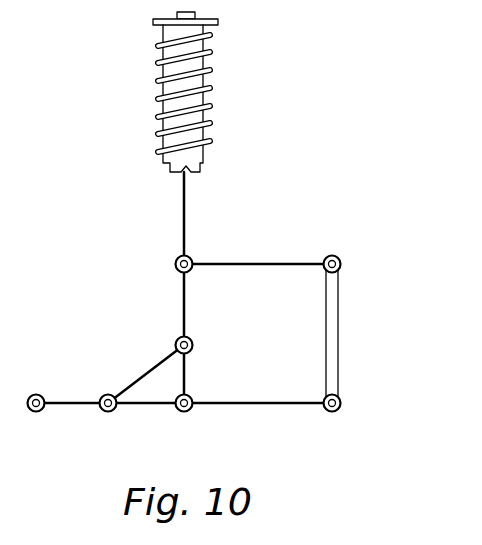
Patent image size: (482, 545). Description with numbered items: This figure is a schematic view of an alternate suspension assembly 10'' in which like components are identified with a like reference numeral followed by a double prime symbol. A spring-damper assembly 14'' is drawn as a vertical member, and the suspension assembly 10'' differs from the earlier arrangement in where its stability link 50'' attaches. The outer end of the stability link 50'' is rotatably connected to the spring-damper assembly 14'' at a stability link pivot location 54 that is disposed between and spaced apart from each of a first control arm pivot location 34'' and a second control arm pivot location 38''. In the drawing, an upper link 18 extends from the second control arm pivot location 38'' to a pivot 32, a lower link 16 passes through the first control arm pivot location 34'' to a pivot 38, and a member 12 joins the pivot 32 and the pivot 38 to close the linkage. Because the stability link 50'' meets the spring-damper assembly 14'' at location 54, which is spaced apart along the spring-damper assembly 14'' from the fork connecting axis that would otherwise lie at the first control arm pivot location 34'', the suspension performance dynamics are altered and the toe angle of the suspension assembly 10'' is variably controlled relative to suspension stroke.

The suspension assembly 10'' is at (348, 94).
The spring-damper assembly 14'' is at (211, 207).
The upper link 18 is at (280, 268).
The lower link 16 is at (262, 405).
The frame link 12 is at (334, 350).
The stability link 50'' is at (128, 374).
The second control arm pivot location 38'' is at (159, 248).
The stability link pivot location 54 is at (177, 340).
The first control arm pivot location 34'' is at (151, 421).
The pivot joint 32 is at (338, 254).
The pivot joint 38 is at (356, 417).